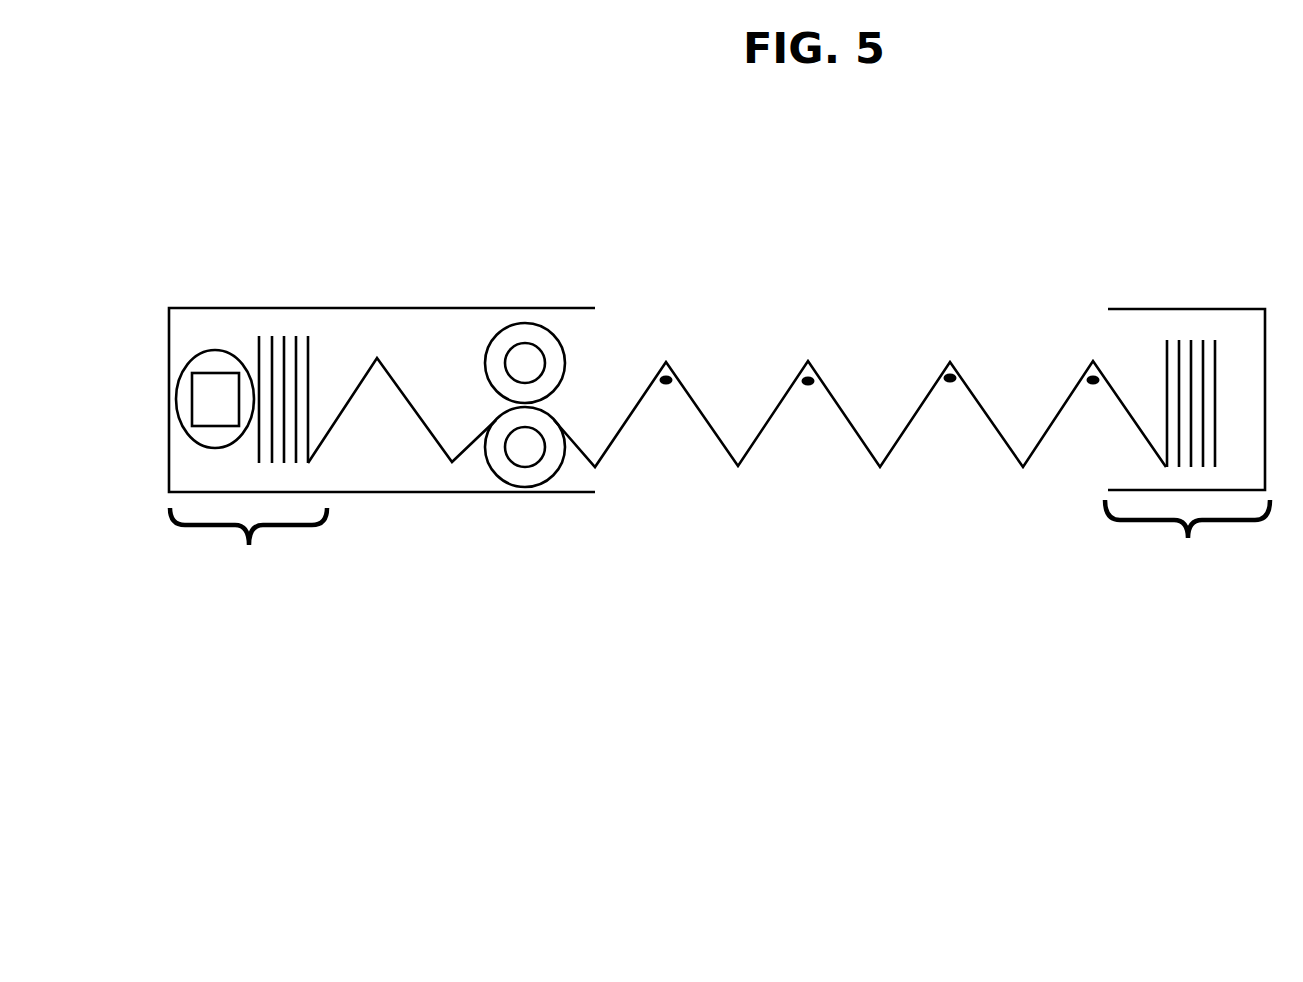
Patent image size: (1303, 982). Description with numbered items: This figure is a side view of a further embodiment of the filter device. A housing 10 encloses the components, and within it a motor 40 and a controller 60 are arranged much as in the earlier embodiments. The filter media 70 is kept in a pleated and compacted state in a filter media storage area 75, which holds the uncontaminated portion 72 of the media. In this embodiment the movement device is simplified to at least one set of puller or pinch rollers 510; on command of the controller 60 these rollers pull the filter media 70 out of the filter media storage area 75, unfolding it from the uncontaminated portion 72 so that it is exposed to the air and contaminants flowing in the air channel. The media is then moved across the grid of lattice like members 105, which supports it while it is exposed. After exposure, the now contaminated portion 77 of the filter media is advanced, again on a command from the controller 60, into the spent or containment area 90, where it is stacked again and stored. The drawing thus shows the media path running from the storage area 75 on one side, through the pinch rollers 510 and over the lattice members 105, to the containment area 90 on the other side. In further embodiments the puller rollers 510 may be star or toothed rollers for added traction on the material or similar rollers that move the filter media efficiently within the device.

The housing 10 is at (407, 306).
The motor 40 is at (191, 352).
The controller 60 is at (215, 372).
The contaminated portion 77 is at (273, 330).
The spent or containment area 90 is at (248, 583).
The set of puller or pinch rollers 510 is at (490, 465).
The filter media 70 is at (750, 382).
The grid of lattice like members 105 is at (941, 386).
The uncontaminated portion 72 is at (1188, 309).
The filter media storage area 75 is at (1187, 493).